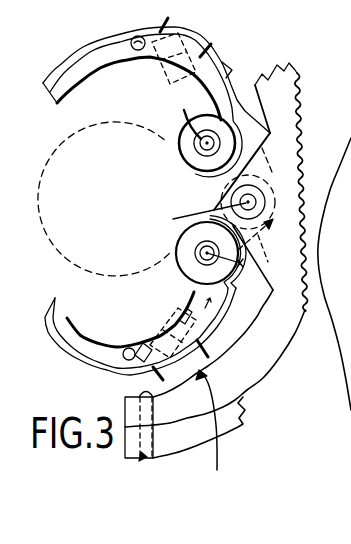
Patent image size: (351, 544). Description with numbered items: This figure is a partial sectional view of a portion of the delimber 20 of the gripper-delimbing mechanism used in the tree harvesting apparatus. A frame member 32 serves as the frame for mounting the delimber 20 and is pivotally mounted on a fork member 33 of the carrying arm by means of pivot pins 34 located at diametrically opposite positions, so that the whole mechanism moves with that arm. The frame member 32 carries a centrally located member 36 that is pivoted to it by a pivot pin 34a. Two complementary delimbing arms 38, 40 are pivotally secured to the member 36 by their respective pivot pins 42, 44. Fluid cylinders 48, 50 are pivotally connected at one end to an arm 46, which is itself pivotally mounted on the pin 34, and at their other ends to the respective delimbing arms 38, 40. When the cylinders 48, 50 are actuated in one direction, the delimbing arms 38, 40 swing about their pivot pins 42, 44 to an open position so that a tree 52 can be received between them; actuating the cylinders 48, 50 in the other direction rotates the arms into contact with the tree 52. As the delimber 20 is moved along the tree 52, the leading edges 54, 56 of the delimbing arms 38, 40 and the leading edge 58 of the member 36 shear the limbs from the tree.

The delimber 20 is at (227, 437).
The frame member 32 is at (293, 80).
The fork member 33 is at (198, 435).
The pivot pins 34 is at (139, 464).
The pivot pin 34a is at (173, 219).
The centrally located member 36 is at (186, 168).
The delimbing arm 38 is at (226, 67).
The delimbing arm 40 is at (75, 352).
The pivot pin 42 is at (184, 112).
The pivot pin 44 is at (207, 253).
The arm 46 is at (205, 252).
The fluid cylinder 48 is at (185, 58).
The fluid cylinder 50 is at (172, 312).
The tree 52 is at (58, 152).
The leading edge 54 is at (128, 70).
The leading edge 56 is at (85, 324).
The leading edge 58 is at (198, 201).